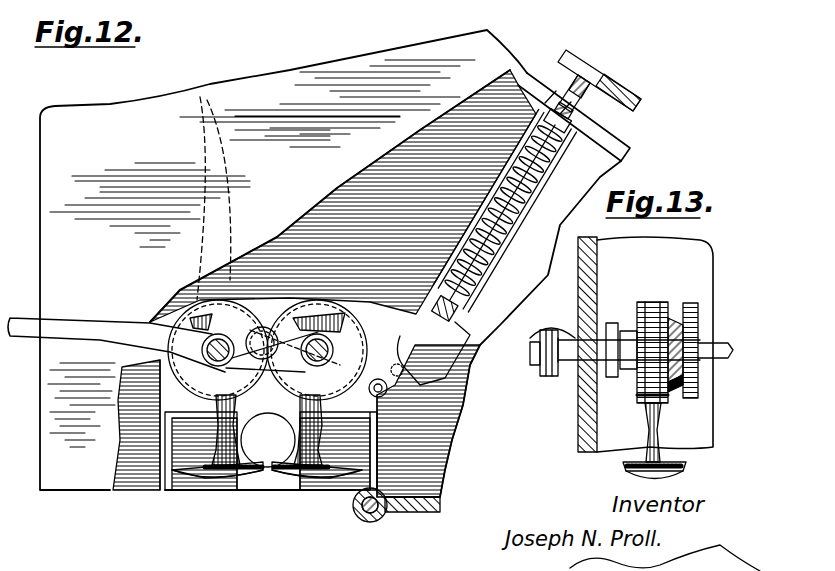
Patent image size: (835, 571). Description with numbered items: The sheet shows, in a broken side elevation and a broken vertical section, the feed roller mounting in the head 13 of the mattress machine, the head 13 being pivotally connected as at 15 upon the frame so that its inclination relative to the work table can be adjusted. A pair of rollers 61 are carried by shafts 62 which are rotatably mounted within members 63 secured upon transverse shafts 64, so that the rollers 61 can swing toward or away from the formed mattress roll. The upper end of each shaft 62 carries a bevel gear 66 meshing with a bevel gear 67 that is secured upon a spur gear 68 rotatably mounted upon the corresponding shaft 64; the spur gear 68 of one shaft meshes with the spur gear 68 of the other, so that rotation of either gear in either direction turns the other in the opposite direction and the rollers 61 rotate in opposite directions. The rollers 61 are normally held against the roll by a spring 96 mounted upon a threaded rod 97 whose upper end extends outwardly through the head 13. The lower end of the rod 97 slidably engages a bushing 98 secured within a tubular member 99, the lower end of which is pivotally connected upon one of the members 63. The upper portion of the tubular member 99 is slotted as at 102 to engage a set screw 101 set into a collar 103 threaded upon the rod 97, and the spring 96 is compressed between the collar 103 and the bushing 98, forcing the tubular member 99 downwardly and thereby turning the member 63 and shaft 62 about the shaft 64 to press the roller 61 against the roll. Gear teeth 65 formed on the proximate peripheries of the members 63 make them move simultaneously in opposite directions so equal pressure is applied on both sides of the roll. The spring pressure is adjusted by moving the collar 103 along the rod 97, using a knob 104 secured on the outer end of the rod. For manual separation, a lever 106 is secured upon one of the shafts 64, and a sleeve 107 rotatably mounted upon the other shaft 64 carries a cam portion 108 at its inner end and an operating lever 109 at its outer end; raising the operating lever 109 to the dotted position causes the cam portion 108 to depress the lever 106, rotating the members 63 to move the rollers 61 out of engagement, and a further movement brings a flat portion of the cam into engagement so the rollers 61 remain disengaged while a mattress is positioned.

In FIG. 12, the head 13 is at (405, 58).
In FIG. 12, the pivotal connection 15 is at (370, 522).
In FIG. 12, the rollers 61 is at (285, 474).
In FIG. 13, the rollers 61 is at (630, 466).
In FIG. 12, the shafts 62 is at (323, 366).
In FIG. 13, the shafts 62 is at (665, 427).
In FIG. 12, the members 63 is at (345, 330).
In FIG. 13, the members 63 is at (641, 400).
In FIG. 12, the transverse shafts 64 is at (203, 350).
In FIG. 13, the transverse shafts 64 is at (626, 367).
In FIG. 12, the gear teeth 65 is at (303, 305).
In FIG. 13, the gear teeth 65 is at (659, 335).
In FIG. 12, the bevel gear 66 is at (150, 312).
In FIG. 13, the bevel gear 66 is at (677, 330).
In FIG. 13, the bevel gear 67 is at (676, 390).
In FIG. 13, the spur gear 68 is at (700, 378).
In FIG. 12, the spring 96 is at (525, 266).
In FIG. 12, the threaded rod 97 is at (580, 144).
In FIG. 12, the bushing 98 is at (458, 340).
In FIG. 12, the tubular member 99 is at (425, 345).
In FIG. 12, the set screw 101 is at (515, 145).
In FIG. 12, the slot 102 is at (470, 192).
In FIG. 12, the collar 103 is at (545, 133).
In FIG. 12, the knob 104 is at (612, 82).
In FIG. 12, the lever 106 is at (287, 368).
In FIG. 12, the sleeve 107 is at (232, 370).
In FIG. 13, the sleeve 107 is at (566, 375).
In FIG. 12, the cam portion 108 is at (195, 300).
In FIG. 13, the cam portion 108 is at (613, 320).
In FIG. 12, the operating lever 109 is at (235, 160).
In FIG. 13, the operating lever 109 is at (547, 330).